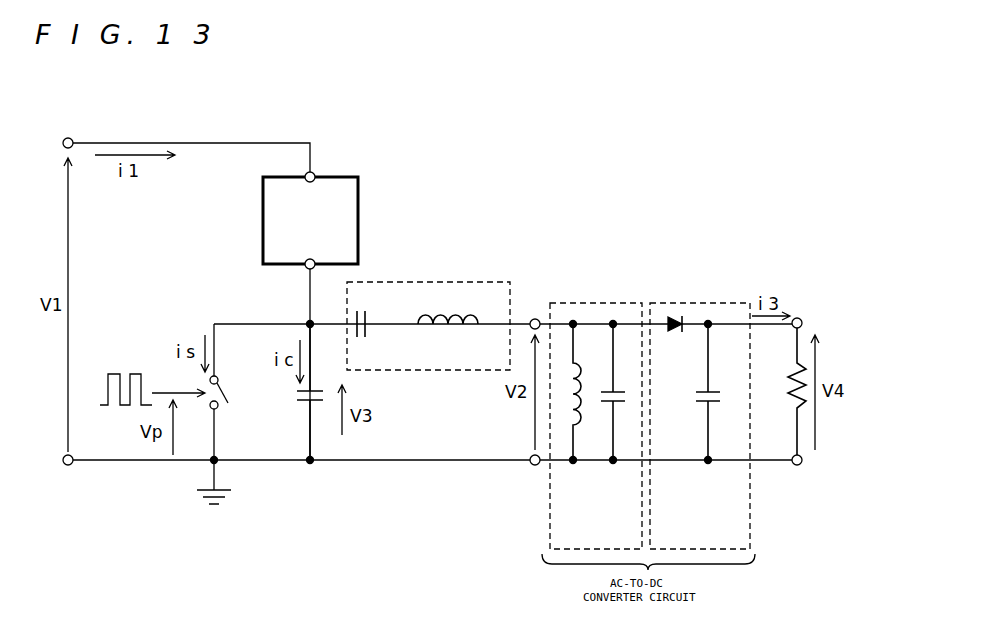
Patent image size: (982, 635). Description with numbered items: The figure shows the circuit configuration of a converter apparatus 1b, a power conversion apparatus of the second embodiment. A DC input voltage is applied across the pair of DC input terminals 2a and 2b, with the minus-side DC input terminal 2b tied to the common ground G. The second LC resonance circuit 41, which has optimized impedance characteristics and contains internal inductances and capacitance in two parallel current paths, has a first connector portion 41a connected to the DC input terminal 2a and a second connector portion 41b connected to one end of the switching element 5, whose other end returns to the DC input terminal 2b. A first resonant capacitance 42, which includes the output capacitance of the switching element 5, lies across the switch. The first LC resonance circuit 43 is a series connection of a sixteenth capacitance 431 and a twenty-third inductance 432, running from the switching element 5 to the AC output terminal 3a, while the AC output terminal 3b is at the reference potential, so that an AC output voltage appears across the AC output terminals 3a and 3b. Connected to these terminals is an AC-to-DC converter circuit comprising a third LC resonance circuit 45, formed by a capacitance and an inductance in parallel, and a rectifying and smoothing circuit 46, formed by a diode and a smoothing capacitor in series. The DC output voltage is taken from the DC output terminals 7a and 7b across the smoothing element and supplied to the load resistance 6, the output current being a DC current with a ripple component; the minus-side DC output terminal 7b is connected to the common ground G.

The converter apparatus 1b is at (383, 116).
The DC input terminal 2a is at (70, 137).
The DC input terminal 2b is at (70, 466).
The second LC resonance circuit 41 is at (359, 193).
The first connector portion 41a is at (314, 173).
The second connector portion 41b is at (306, 270).
The switching element 5 is at (223, 393).
The first resonant capacitance 42 is at (313, 390).
The first LC resonance circuit 43 is at (440, 282).
The sixteenth capacitance 431 is at (362, 311).
The twenty-third inductance 432 is at (438, 312).
The AC output terminal 3a is at (538, 317).
The AC output terminal 3b is at (538, 467).
The third LC resonance circuit 45 is at (584, 303).
The rectifying and smoothing circuit 46 is at (678, 303).
The load resistance 6 is at (788, 390).
The DC output terminal 7a is at (800, 317).
The DC output terminal 7b is at (800, 466).
The common ground G is at (220, 489).